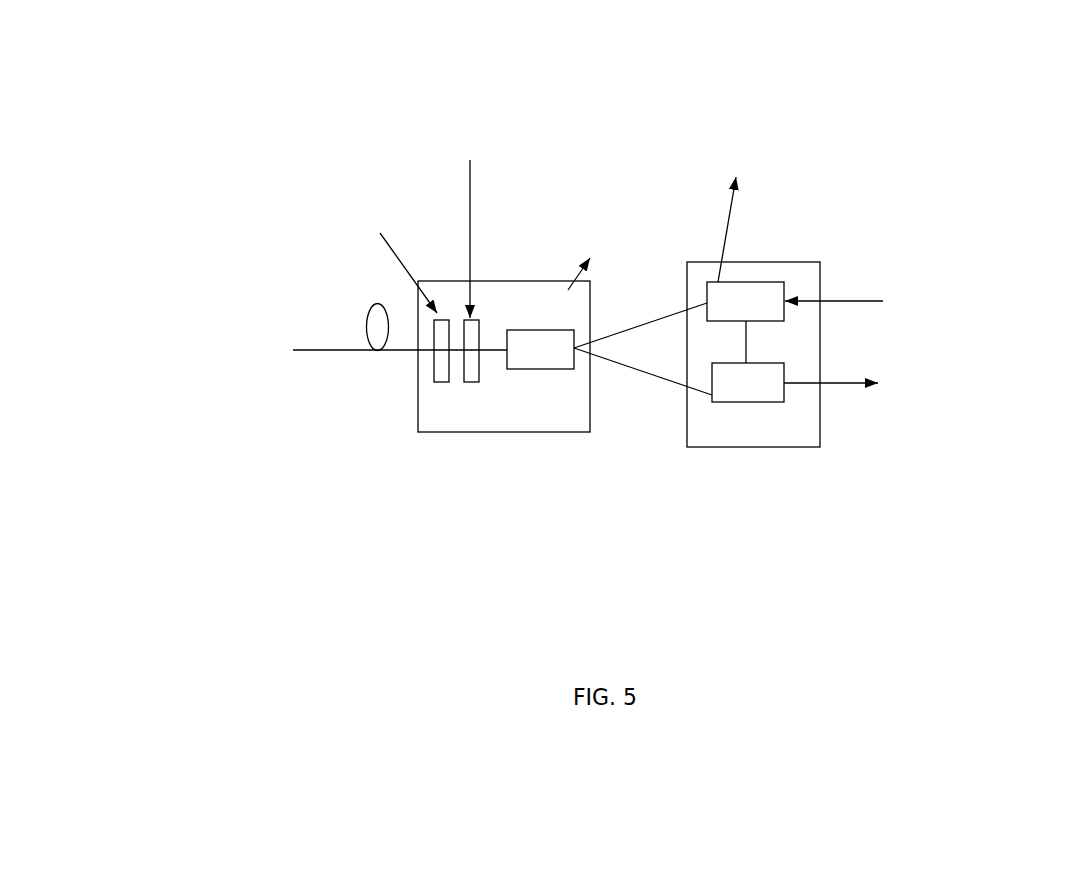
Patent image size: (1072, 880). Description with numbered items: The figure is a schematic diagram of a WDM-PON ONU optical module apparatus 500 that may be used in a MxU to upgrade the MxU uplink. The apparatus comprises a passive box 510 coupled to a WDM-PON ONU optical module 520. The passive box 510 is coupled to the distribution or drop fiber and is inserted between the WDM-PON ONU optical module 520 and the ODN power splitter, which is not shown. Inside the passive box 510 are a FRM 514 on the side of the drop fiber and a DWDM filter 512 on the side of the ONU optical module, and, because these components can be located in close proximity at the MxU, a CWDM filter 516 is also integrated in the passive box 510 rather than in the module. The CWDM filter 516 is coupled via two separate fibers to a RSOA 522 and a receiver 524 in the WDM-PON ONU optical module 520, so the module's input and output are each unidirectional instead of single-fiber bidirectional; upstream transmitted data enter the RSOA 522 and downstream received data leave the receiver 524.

The WDM-PON ONU optical module apparatus 500 is at (97, 64).
The passive box 510 is at (485, 281).
The DWDM filter 512 is at (477, 382).
The FRM 514 is at (436, 380).
The CWDM filter 516 is at (542, 369).
The WDM-PON ONU optical module 520 is at (758, 262).
The RSOA 522 is at (768, 322).
The receiver 524 is at (768, 402).